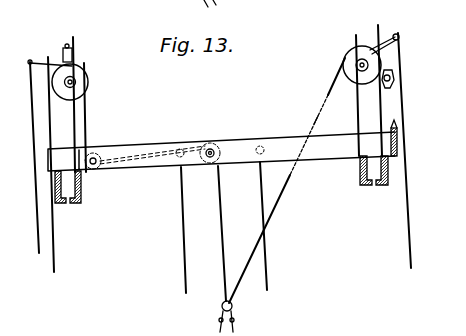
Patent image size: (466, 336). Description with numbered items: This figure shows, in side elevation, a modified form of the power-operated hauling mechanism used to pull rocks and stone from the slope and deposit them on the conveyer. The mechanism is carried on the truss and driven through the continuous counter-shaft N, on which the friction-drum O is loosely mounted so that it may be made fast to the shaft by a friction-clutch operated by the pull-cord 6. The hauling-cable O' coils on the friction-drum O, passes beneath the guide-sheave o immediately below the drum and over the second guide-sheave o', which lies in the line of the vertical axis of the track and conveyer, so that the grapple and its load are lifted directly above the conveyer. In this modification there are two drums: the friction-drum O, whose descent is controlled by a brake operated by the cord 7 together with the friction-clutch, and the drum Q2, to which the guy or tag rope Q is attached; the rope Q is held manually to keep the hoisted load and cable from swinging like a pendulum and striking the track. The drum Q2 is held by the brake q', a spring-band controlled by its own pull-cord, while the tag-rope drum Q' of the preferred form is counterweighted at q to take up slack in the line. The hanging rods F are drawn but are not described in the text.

The cord 7 is at (34, 158).
The pull-cord 6 is at (54, 236).
The counter-shaft N is at (76, 80).
The friction-drum O is at (152, 188).
The hauling-cable O' is at (96, 117).
The guide-sheave o is at (101, 149).
The guide-sheave o' is at (217, 148).
The hanging rods F is at (185, 227).
The guy or tag rope Q is at (324, 121).
The drum Q2 is at (341, 63).
The drum Q' is at (382, 95).
The brake q' is at (394, 88).
The counterweight q is at (406, 150).